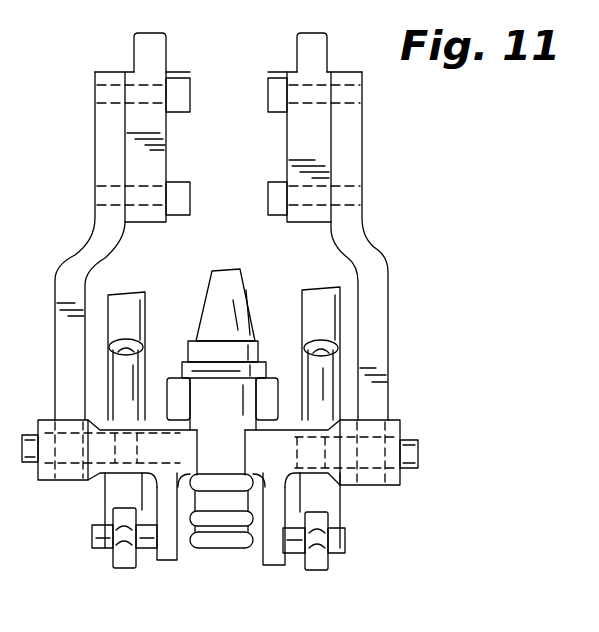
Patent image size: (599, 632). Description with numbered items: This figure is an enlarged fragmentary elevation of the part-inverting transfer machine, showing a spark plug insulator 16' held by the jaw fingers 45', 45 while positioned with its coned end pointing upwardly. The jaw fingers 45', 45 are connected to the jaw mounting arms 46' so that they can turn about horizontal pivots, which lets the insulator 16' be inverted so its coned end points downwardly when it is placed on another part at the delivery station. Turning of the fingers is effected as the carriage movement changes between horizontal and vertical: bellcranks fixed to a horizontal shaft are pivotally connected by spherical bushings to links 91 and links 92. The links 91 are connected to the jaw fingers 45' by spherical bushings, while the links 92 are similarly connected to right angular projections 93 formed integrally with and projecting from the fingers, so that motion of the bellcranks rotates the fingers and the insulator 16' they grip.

The jaw mounting arm 46' is at (229, 226).
The part 16' is at (222, 330).
The link 91 is at (130, 372).
The jaw finger 45' is at (109, 453).
The jaw finger 45 is at (331, 453).
The link 92 is at (118, 548).
The right angular projection 93 is at (167, 557).